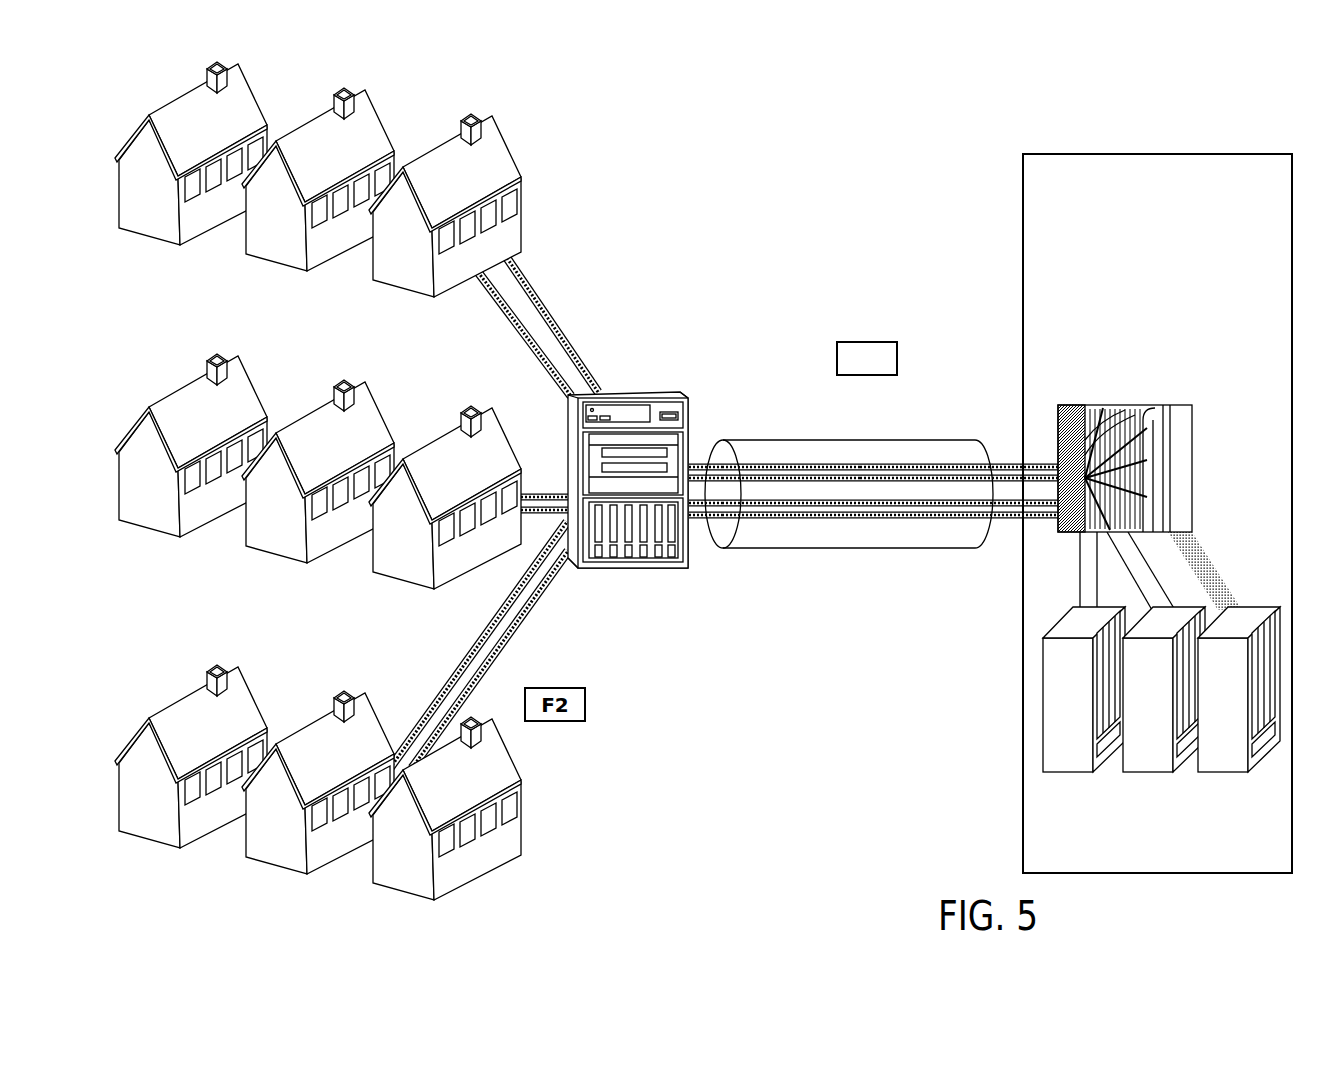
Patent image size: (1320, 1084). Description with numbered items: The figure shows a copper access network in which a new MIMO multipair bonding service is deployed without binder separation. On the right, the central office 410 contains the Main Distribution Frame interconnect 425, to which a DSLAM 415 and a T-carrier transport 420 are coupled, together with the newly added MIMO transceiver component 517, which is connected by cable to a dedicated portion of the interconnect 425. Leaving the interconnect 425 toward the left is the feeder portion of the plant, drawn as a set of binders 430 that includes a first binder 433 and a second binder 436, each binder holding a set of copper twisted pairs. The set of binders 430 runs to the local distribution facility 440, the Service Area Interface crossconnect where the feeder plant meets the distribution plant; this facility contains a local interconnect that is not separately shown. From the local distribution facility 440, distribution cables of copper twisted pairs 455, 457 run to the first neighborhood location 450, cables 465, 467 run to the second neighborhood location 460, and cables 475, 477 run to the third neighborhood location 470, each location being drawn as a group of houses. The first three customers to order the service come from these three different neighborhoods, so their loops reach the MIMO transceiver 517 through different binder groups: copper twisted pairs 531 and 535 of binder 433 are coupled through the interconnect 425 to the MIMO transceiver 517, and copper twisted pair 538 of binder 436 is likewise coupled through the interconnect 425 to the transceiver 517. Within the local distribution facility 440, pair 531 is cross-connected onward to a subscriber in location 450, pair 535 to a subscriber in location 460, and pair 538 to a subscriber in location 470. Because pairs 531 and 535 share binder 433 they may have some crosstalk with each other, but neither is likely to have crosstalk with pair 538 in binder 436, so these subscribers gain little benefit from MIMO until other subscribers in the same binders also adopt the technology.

The central office 410 is at (1127, 233).
The DSLAM 415 is at (1055, 673).
The T1 transport 420 is at (1142, 738).
The interconnect 425 is at (1117, 405).
The set of binders 430 is at (853, 440).
The binder 433 is at (701, 454).
The binder 436 is at (703, 536).
The local distribution facility 440 is at (630, 395).
The location 450 is at (180, 277).
The cable of copper twisted pairs 455 is at (550, 318).
The distribution cable 457 is at (533, 360).
The location 460 is at (170, 565).
The cable of copper twisted pairs 465 is at (545, 494).
The distribution cable 467 is at (532, 513).
The location 470 is at (170, 866).
The cable of copper twisted pairs 475 is at (477, 645).
The distribution cable 477 is at (520, 628).
The MIMO transceiver component 517 is at (1215, 757).
The copper twisted pair 531 is at (797, 474).
The copper twisted pair 535 is at (935, 476).
The copper twisted pair 538 is at (808, 521).